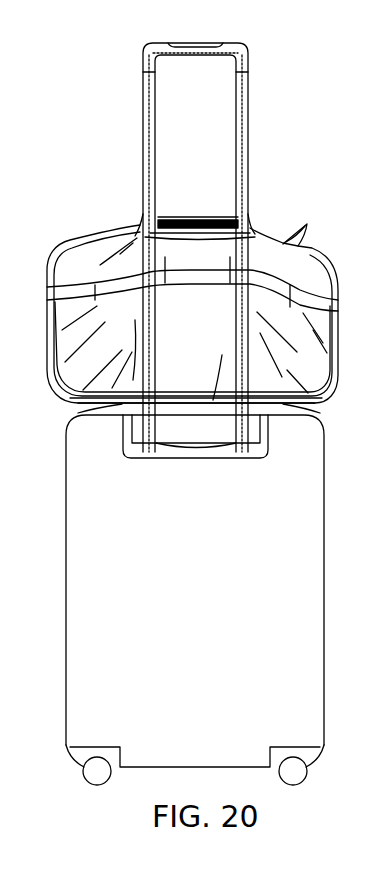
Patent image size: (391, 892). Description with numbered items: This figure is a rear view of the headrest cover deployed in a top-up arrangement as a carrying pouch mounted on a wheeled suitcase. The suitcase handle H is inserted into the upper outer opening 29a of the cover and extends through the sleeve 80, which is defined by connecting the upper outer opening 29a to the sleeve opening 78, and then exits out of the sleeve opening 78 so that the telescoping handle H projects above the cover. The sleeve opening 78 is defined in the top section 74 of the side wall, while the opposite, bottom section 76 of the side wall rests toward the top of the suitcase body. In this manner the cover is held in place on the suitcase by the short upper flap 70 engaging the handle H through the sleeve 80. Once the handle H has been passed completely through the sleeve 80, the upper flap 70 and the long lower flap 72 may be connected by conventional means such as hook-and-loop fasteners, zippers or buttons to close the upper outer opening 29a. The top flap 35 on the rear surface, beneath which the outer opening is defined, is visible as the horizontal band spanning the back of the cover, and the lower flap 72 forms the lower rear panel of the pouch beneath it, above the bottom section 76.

The handle H is at (243, 93).
The upper flap 70 is at (313, 267).
The lower flap 72 is at (322, 373).
The top section 74 is at (262, 233).
The bottom section 76 is at (317, 403).
The sleeve opening 78 is at (162, 227).
The sleeve 80 is at (197, 209).
The top flap 35 is at (180, 280).
The upper outer opening 29a is at (213, 299).